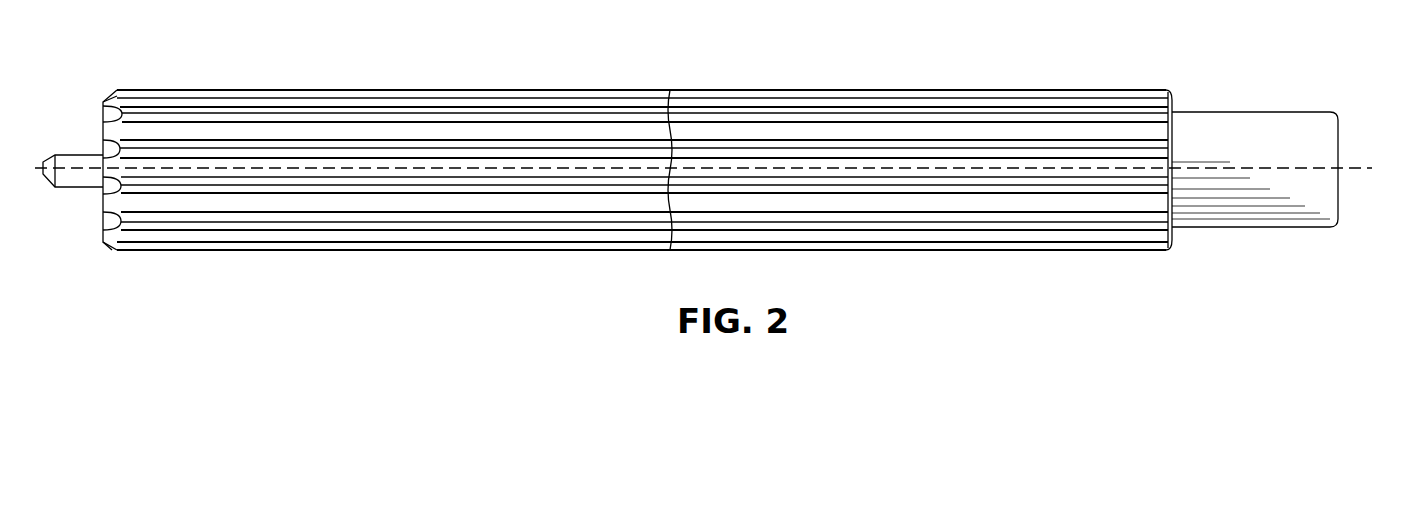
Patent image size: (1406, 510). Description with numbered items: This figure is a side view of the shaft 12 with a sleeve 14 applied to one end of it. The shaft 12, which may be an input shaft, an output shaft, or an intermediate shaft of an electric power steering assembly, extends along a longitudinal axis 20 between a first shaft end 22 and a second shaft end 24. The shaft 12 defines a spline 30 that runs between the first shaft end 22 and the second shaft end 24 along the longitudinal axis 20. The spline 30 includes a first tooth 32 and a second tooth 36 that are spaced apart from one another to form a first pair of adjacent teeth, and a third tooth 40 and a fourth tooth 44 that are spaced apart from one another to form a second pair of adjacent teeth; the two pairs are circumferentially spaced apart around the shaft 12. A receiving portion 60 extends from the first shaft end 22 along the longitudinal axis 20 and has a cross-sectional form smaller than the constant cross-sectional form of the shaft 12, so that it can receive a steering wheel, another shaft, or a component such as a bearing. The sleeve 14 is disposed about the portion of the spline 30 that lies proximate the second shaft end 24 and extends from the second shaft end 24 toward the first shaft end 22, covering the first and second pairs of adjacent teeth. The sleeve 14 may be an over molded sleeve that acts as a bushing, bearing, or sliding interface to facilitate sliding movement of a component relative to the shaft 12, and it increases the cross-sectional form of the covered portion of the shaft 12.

The shaft 12 is at (840, 76).
The sleeve 14 is at (360, 90).
The longitudinal axis 20 is at (1354, 170).
The first shaft end 22 is at (1176, 101).
The second shaft end 24 is at (103, 97).
The spline 30 is at (750, 89).
The first tooth 32 is at (708, 101).
The second tooth 36 is at (770, 137).
The third tooth 40 is at (760, 200).
The fourth tooth 44 is at (848, 233).
The receiving portion 60 is at (1305, 109).